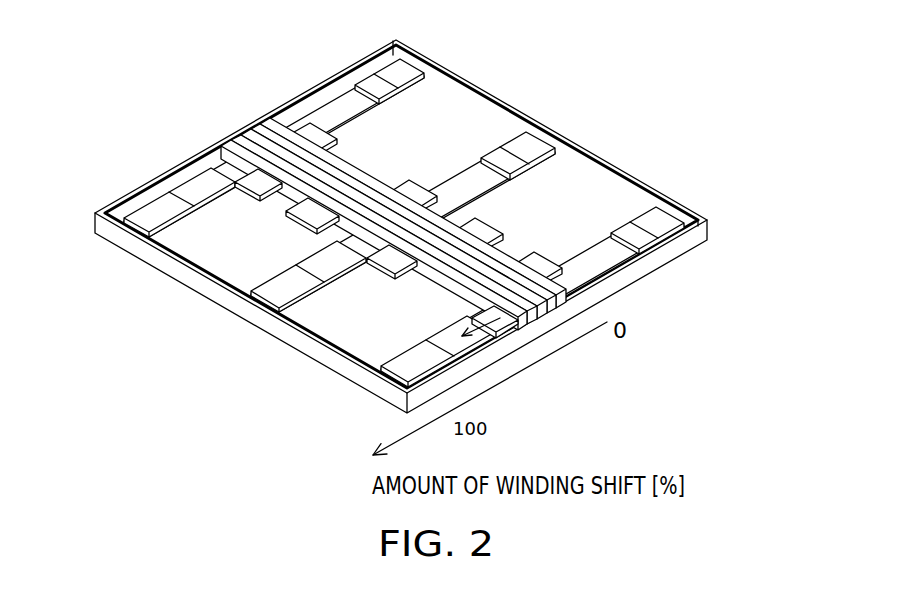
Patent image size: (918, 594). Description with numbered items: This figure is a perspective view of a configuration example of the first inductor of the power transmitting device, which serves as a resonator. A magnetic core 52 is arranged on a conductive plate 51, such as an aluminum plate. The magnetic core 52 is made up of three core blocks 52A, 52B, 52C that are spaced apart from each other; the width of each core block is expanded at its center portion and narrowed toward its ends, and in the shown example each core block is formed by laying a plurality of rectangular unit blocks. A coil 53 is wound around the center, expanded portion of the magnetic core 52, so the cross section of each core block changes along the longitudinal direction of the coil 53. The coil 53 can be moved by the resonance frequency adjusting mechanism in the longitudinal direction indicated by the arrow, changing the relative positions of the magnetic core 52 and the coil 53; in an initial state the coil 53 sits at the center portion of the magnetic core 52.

The conductive plate 51 is at (285, 342).
The magnetic core 52 is at (456, 200).
The core block 52A is at (395, 72).
The core block 52B is at (513, 152).
The core block 52C is at (569, 279).
The coil 53 is at (266, 134).